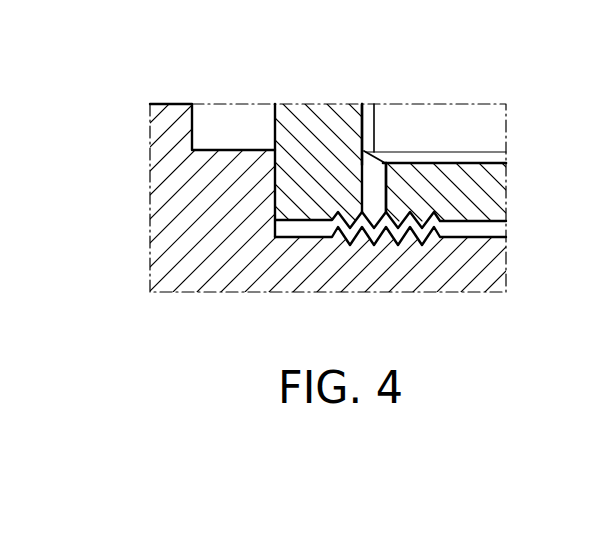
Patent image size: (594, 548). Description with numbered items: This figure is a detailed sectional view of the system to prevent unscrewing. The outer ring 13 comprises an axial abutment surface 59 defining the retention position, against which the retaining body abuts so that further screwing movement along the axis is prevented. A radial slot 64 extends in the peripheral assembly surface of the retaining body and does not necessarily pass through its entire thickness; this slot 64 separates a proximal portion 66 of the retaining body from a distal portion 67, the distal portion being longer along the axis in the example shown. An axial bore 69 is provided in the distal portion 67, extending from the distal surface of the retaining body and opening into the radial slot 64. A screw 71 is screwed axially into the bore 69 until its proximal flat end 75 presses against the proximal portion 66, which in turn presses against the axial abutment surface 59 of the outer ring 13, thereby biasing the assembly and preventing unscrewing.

The outer ring 13 is at (185, 167).
The axial abutment surface 59 is at (275, 175).
The radial slot 64 is at (376, 183).
The proximal portion 66 is at (296, 190).
The distal portion 67 is at (477, 200).
The axial bore 69 is at (420, 162).
The screw 71 is at (470, 125).
The flat end 75 is at (360, 135).